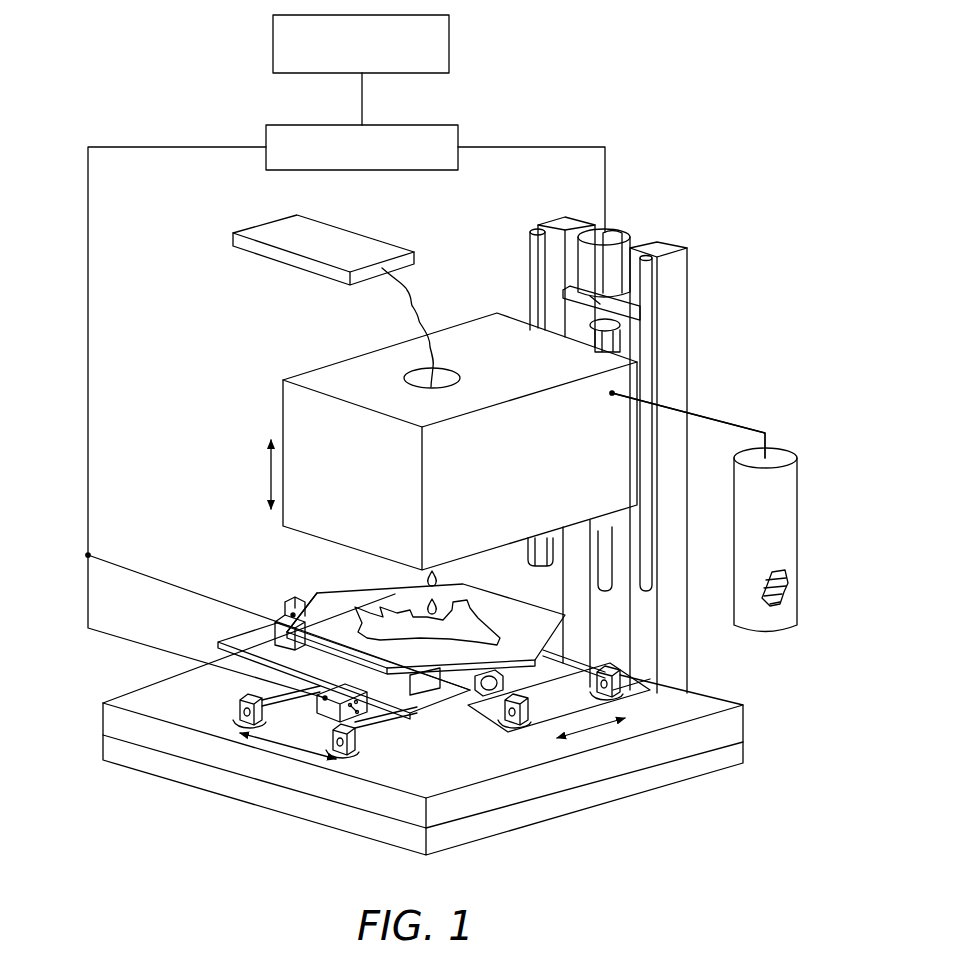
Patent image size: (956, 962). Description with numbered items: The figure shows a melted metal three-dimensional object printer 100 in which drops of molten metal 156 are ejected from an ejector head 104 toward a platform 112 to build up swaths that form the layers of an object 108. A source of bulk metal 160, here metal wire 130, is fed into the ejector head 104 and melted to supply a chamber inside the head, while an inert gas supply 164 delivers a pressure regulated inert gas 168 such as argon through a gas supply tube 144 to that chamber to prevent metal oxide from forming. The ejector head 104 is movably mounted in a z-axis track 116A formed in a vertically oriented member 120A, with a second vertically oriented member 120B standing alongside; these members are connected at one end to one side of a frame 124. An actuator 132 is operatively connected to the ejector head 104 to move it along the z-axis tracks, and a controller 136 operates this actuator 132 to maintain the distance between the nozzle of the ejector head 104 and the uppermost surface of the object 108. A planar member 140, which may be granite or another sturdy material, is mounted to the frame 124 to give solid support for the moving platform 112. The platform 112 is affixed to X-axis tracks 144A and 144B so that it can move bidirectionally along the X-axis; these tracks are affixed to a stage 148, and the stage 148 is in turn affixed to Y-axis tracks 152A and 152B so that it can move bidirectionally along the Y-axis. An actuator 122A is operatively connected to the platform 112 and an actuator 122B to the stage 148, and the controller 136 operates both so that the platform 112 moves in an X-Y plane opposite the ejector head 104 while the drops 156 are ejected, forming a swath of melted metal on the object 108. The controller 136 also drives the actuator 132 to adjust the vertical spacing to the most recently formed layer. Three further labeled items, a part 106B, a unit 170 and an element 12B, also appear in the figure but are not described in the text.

The melted metal 3D object printer 100 is at (729, 269).
The ejector head 104 is at (345, 370).
The mounting bracket 106B is at (640, 322).
The object 108 is at (477, 625).
The platform 112 is at (332, 592).
The z-axis track 116A is at (530, 252).
The vertically oriented member 120A is at (535, 290).
The vertically oriented member 120B is at (640, 547).
The actuator 122A is at (280, 630).
The actuator 122B is at (357, 710).
The frame 124 is at (125, 750).
The metal wire 130 is at (413, 312).
The actuator 132 is at (605, 237).
The controller 136 is at (420, 125).
The planar member 140 is at (143, 700).
The gas supply tube 144 is at (728, 428).
The X-axis track 144A is at (248, 690).
The X-axis track 144B is at (390, 723).
The stage 148 is at (253, 638).
The Y-axis track 152A is at (495, 698).
The Y-axis track 152B is at (600, 655).
The drops of molten metal 156 is at (427, 606).
The source of bulk metal 160 is at (347, 238).
The inert gas supply 164 is at (734, 532).
The inert gas 168 is at (780, 607).
The user interface 170 is at (450, 46).
The coupling 12B is at (600, 300).